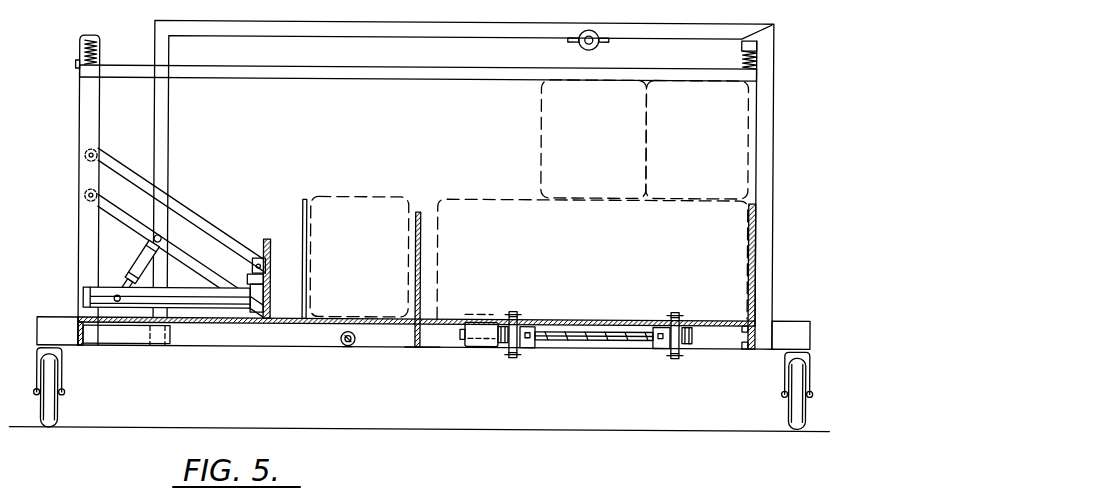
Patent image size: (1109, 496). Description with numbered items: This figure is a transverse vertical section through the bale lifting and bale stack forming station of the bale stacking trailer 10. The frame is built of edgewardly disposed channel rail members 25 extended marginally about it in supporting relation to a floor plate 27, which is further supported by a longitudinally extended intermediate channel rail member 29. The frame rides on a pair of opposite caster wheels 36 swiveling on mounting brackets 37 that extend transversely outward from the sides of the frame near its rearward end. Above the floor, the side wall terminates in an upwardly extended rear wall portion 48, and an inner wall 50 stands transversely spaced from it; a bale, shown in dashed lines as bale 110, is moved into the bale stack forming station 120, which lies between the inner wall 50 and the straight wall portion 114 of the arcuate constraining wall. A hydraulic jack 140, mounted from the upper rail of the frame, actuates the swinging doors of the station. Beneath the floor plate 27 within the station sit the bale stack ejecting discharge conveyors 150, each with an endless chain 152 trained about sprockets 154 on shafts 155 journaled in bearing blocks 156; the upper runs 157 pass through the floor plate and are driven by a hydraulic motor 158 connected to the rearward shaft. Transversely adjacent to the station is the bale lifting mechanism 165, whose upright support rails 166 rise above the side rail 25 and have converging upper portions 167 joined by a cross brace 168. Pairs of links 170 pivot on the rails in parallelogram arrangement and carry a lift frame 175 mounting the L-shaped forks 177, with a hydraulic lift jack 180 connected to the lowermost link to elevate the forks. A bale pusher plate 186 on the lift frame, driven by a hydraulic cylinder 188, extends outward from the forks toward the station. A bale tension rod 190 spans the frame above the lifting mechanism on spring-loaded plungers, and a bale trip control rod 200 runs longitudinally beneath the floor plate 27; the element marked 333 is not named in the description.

The bale stacking trailer 10 is at (283, 348).
The channel rail members 25 is at (81, 348).
The floor plate 27 is at (233, 323).
The intermediate channel rail member 29 is at (423, 338).
The caster wheels 36 is at (56, 411).
The mounting brackets 37 is at (56, 324).
The rear wall portion 48 is at (303, 200).
The inner wall 50 is at (420, 214).
The bales 110 is at (682, 78).
The straight wall portion 114 is at (757, 258).
The bale stack forming station 120 is at (605, 180).
The hydraulic jack 140 is at (594, 29).
The bale stack ejecting discharge conveyors 150 is at (581, 339).
The endless chain 152 is at (513, 357).
The sprockets 154 is at (504, 348).
The shafts 155 is at (590, 340).
The bearing blocks 156 is at (533, 348).
The upper runs 157 is at (514, 309).
The hydraulic motor 158 is at (470, 348).
The bale lifting mechanism 165 is at (243, 236).
The upright support rails 166 is at (85, 203).
The converging upper portions 167 is at (86, 98).
The cross brace 168 is at (88, 30).
The links 170 is at (175, 246).
The lift frame 175 is at (270, 270).
The forks 177 is at (376, 323).
The hydraulic lift jack 180 is at (140, 262).
The bale pusher plate 186 is at (270, 300).
The hydraulic cylinder 188 is at (190, 300).
The bale tension rod 190 is at (265, 78).
The bale trip control rod 200 is at (345, 346).
The stop 333 is at (467, 311).